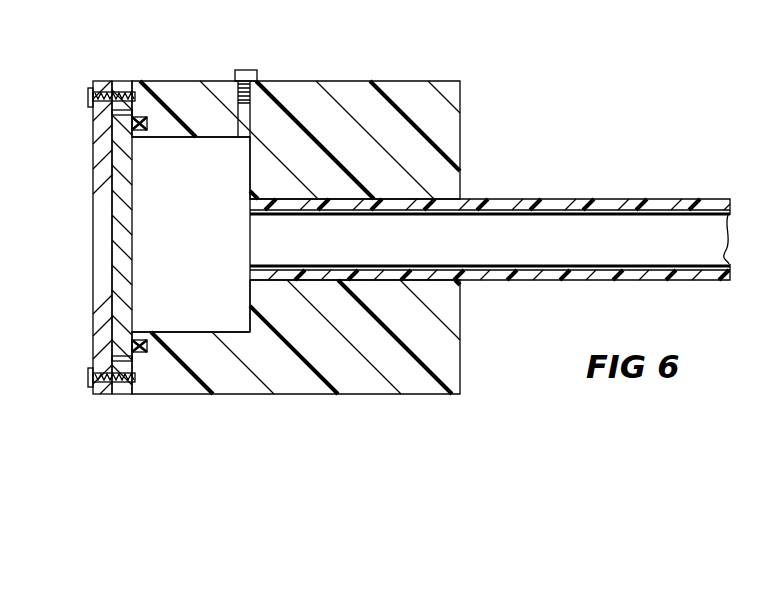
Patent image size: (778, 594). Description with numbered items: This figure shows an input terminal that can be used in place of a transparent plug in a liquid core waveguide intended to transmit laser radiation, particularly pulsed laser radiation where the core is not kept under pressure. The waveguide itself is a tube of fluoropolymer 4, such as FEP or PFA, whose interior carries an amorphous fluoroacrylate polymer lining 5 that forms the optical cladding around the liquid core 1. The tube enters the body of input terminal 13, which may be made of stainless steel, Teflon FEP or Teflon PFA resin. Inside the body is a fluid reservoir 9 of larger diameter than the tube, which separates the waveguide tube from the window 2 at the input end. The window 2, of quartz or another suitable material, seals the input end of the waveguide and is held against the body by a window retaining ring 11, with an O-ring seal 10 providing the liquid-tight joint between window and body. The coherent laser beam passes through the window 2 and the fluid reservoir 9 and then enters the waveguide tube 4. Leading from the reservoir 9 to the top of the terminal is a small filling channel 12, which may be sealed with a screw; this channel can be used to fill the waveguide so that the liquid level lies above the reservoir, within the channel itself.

The liquid core 1 is at (490, 214).
The window 2 is at (120, 202).
The tube of fluoropolymer 4 is at (613, 200).
The amorphous fluoroacrylate polymer lining 5 is at (550, 200).
The fluid reservoir 9 is at (177, 262).
The O-ring seal 10 is at (147, 351).
The window retaining ring 11 is at (102, 317).
The filling channel 12 is at (240, 125).
The body of input terminal 13 is at (398, 368).